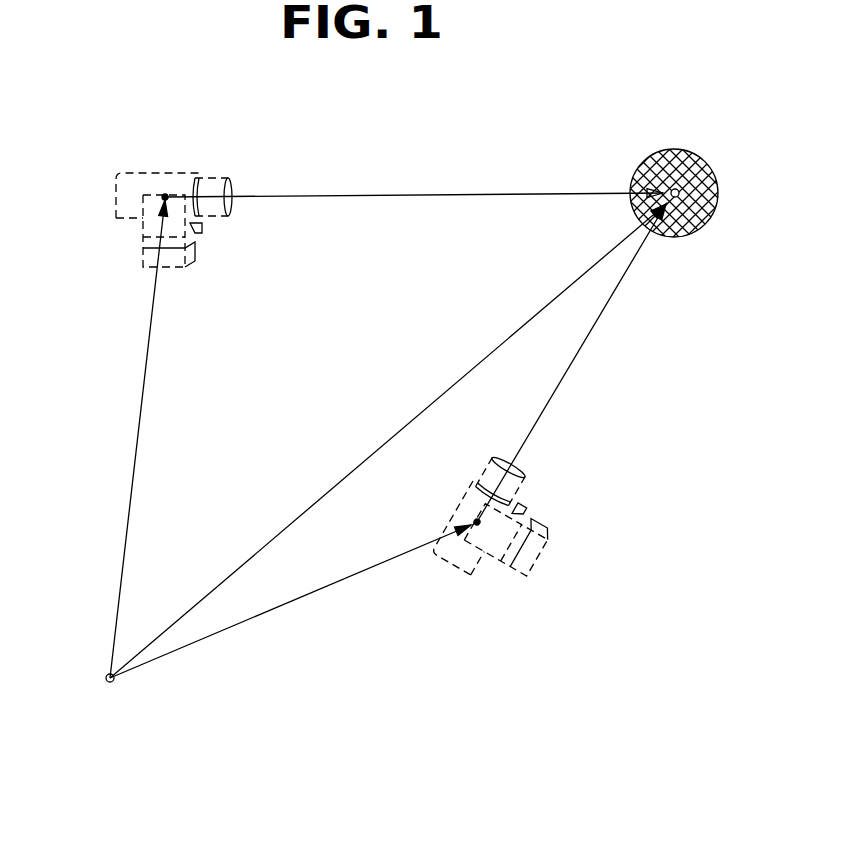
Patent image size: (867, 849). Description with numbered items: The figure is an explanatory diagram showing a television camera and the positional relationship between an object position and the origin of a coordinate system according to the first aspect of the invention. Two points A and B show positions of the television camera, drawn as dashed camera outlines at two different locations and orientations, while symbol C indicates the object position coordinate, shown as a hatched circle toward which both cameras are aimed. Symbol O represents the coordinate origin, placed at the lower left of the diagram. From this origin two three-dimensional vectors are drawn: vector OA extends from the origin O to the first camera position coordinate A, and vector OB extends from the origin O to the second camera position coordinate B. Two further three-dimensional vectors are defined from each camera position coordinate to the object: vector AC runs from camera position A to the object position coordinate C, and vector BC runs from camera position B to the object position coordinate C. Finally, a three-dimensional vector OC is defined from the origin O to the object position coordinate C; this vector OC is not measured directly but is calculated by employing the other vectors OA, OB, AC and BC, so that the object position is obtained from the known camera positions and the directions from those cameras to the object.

The camera position A is at (174, 200).
The camera position B is at (494, 525).
The object position coordinate C is at (683, 201).
The coordinate origin O is at (90, 698).
The vector OA is at (108, 445).
The vector OB is at (313, 630).
The vector OC is at (373, 402).
The vector AC is at (393, 147).
The vector BC is at (625, 370).